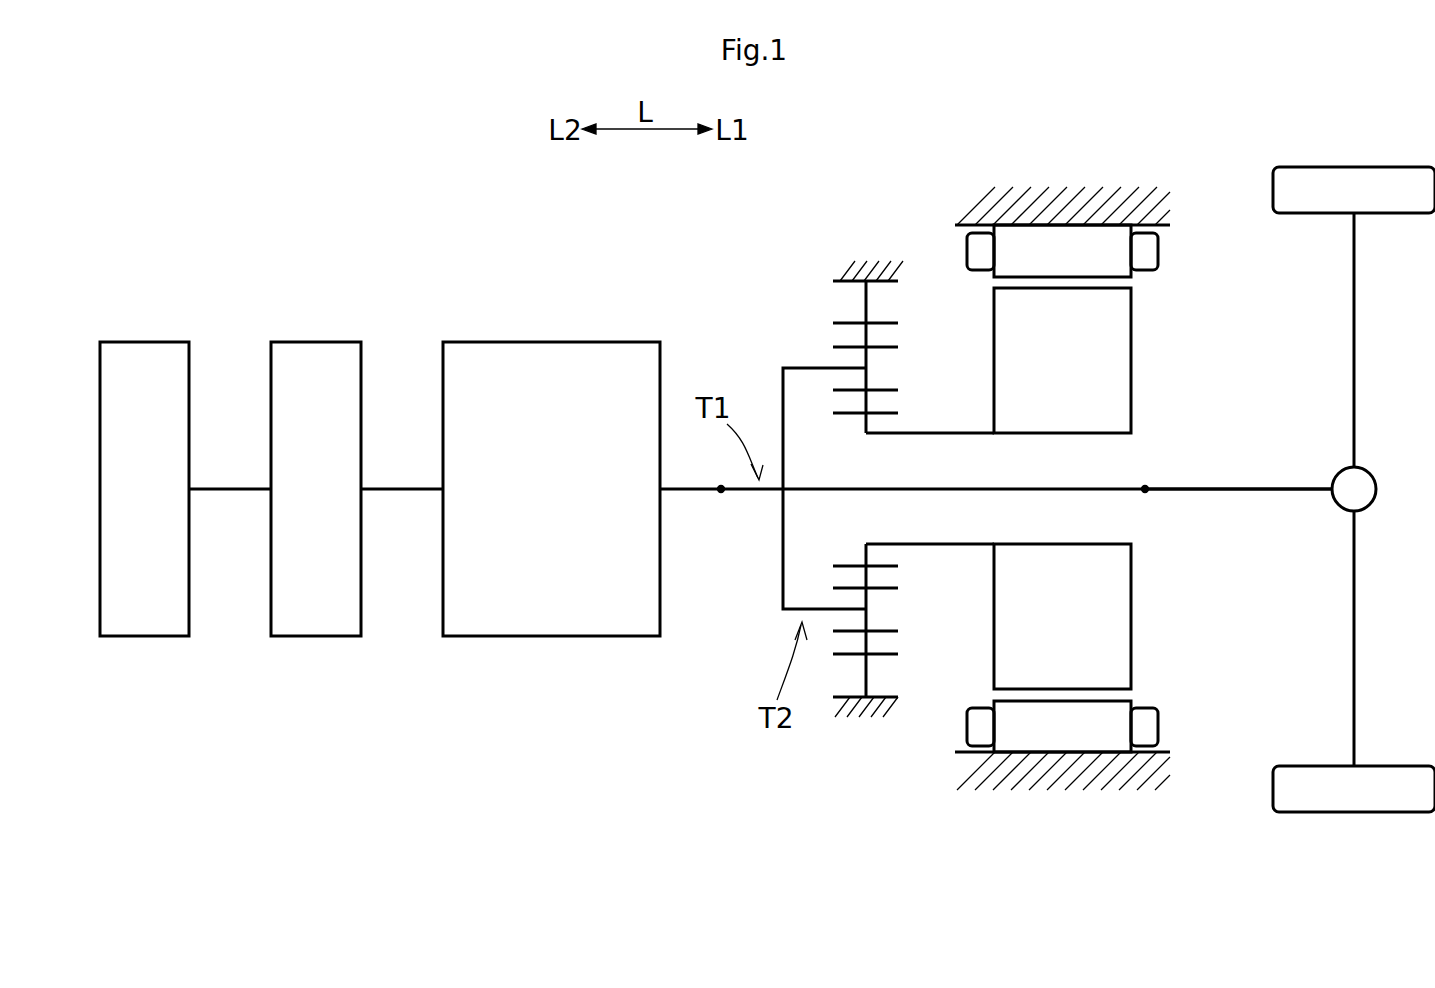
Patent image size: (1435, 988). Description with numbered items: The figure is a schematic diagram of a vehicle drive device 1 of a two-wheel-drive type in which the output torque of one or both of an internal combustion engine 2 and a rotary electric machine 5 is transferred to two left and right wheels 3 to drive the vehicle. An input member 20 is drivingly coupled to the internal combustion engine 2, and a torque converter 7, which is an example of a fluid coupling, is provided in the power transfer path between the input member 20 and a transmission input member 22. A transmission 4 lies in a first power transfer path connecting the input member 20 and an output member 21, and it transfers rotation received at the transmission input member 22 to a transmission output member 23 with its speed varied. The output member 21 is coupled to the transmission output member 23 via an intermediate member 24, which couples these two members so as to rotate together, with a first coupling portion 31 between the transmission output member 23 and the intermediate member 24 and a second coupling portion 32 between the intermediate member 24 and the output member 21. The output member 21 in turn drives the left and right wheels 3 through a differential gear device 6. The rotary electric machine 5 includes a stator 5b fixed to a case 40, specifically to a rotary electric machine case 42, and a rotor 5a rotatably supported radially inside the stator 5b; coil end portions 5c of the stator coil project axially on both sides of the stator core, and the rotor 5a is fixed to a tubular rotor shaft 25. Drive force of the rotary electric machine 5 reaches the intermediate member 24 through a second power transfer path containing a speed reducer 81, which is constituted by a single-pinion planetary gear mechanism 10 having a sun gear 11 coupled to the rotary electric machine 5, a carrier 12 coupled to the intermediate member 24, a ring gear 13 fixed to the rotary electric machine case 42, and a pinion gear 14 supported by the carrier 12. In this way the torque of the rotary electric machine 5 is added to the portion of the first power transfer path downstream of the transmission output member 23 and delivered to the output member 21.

The vehicle drive device 1 is at (965, 88).
The internal combustion engine 2 is at (139, 350).
The wheels 3 is at (1352, 178).
The transmission 4 is at (551, 342).
The rotary electric machine 5 is at (1198, 340).
The rotor 5a is at (1118, 369).
The stator 5b is at (1073, 240).
The coil end portions 5c is at (974, 245).
The differential gear device 6 is at (1370, 491).
The torque converter 7 is at (318, 354).
The planetary gear mechanism 10 is at (876, 359).
The speed reducer 81 is at (950, 307).
The sun gear 11 is at (848, 414).
The carrier 12 is at (781, 394).
The ring gear 13 is at (847, 322).
The pinion gear 14 is at (882, 392).
The input member 20 is at (232, 493).
The output member 21 is at (1266, 493).
The transmission input member 22 is at (402, 493).
The transmission output member 23 is at (686, 493).
The intermediate member 24 is at (930, 493).
The rotor shaft 25 is at (948, 436).
The first coupling portion 31 is at (722, 492).
The second coupling portion 32 is at (1146, 492).
The case 40 is at (850, 832).
The rotary electric machine case 42 is at (851, 714).